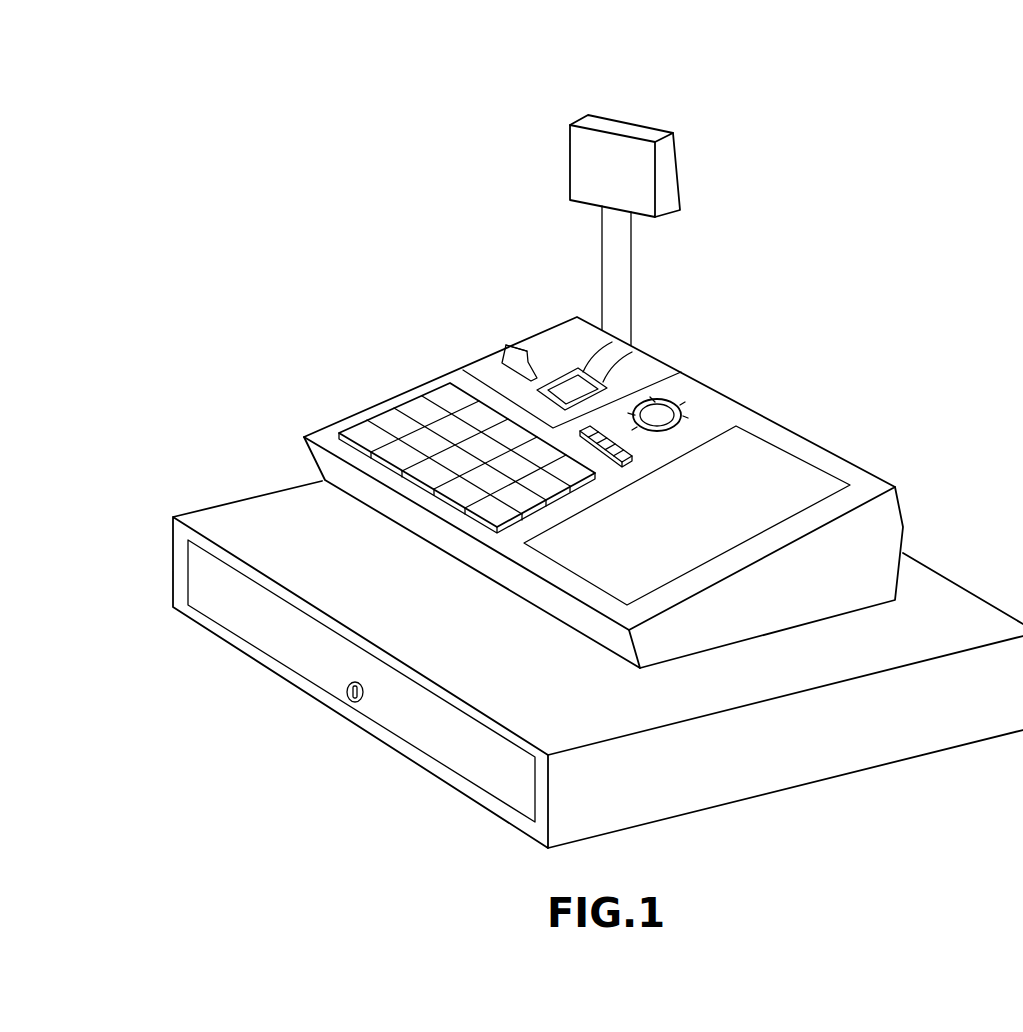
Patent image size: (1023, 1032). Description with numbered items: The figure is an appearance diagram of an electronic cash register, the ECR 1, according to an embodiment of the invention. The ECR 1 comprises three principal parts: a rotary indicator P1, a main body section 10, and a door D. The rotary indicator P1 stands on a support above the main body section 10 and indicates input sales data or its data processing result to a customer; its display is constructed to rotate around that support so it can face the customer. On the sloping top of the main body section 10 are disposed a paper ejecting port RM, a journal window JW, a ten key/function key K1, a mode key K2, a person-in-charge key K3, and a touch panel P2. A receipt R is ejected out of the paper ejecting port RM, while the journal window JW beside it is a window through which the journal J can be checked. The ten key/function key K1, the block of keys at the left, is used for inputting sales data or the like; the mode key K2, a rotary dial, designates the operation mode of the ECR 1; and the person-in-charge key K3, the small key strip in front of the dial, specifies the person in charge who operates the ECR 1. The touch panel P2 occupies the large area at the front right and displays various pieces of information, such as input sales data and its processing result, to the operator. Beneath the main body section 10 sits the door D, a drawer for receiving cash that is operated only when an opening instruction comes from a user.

The electronic cash register 1 is at (941, 150).
The main body section 10 is at (920, 486).
The rotary indicator P1 is at (620, 128).
The touch panel P2 is at (760, 498).
The ten key/function key K1 is at (418, 405).
The mode key K2 is at (682, 407).
The person-in-charge key K3 is at (633, 456).
The receipt R is at (516, 343).
The paper ejecting port RM is at (533, 380).
The journal J is at (583, 372).
The journal window JW is at (603, 382).
The door D is at (417, 723).